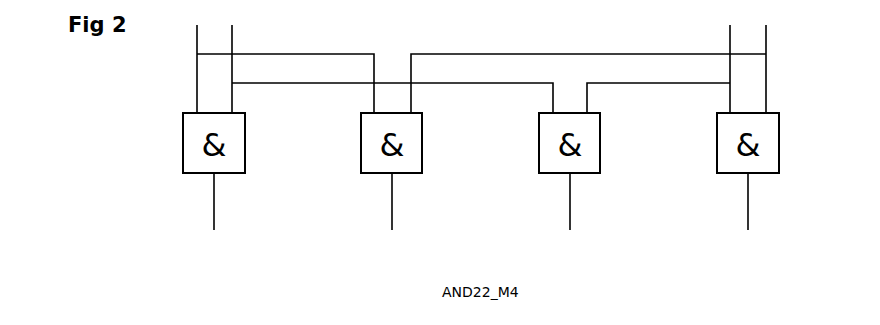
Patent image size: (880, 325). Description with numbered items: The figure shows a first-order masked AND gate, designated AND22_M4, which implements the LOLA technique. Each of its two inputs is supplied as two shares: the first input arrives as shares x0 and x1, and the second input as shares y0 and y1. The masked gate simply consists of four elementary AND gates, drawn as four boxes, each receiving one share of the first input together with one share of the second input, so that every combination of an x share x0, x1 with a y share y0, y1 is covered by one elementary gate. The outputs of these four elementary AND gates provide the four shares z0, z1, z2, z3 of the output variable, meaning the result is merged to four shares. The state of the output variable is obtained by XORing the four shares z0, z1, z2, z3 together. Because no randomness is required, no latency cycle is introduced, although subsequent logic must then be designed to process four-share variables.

The first share of input variable x x0 is at (281, 61).
The first share of input variable y y0 is at (388, 61).
The second share of input variable x x1 is at (662, 61).
The second share of input variable y y1 is at (592, 61).
The first output share z0 is at (213, 212).
The second output share z1 is at (391, 212).
The third output share z2 is at (569, 212).
The fourth output share z3 is at (747, 212).